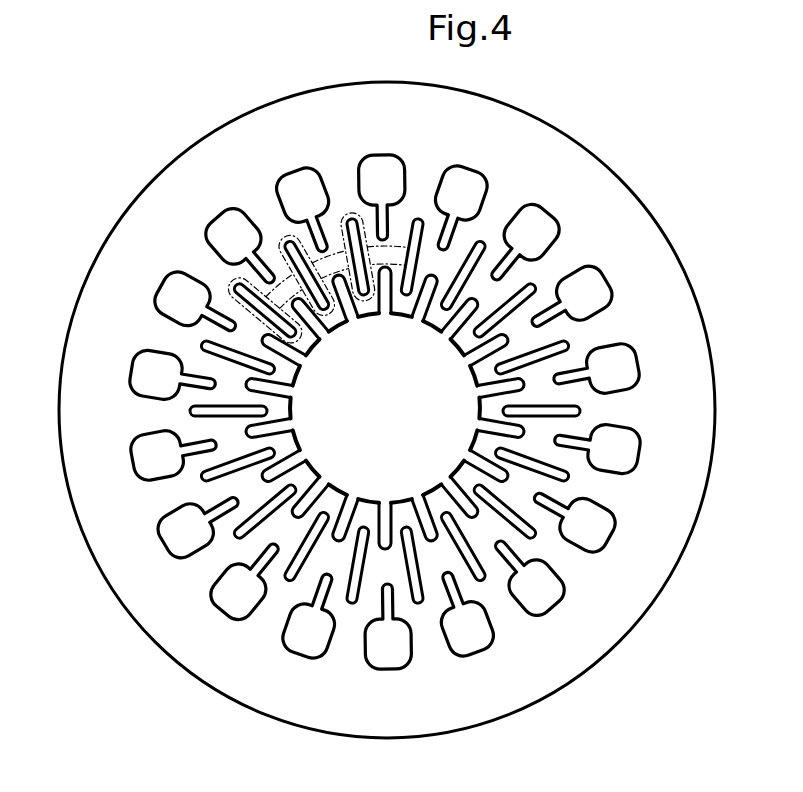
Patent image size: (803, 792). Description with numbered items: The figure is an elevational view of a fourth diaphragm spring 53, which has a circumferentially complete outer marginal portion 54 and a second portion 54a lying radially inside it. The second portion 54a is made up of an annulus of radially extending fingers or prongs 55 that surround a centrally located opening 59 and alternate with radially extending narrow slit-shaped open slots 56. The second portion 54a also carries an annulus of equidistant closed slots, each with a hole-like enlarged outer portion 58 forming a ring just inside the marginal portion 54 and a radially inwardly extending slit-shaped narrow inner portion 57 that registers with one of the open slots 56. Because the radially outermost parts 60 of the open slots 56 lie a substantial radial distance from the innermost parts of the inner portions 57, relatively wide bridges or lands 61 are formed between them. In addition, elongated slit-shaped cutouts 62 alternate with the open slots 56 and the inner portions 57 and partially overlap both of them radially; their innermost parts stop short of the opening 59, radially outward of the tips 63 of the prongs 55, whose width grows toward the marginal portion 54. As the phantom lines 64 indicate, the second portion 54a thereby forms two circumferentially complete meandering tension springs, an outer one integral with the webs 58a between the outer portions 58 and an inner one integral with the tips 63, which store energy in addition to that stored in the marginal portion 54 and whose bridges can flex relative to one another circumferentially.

The diaphragm spring 53 is at (530, 102).
The outer marginal portion 54 is at (570, 178).
The second portion 54a is at (488, 557).
The prongs 55 is at (415, 318).
The open slots 56 is at (466, 308).
The inner portions of closed slots 57 is at (587, 282).
The outer portions of closed slots 58 is at (598, 298).
The webs 58a is at (570, 567).
The opening 59 is at (306, 349).
The radially outermost parts of open slots 60 is at (498, 313).
The bridges or lands 61 is at (520, 335).
The cutouts 62 is at (486, 412).
The tips of prongs 63 is at (487, 442).
The phantom lines 64 is at (382, 258).